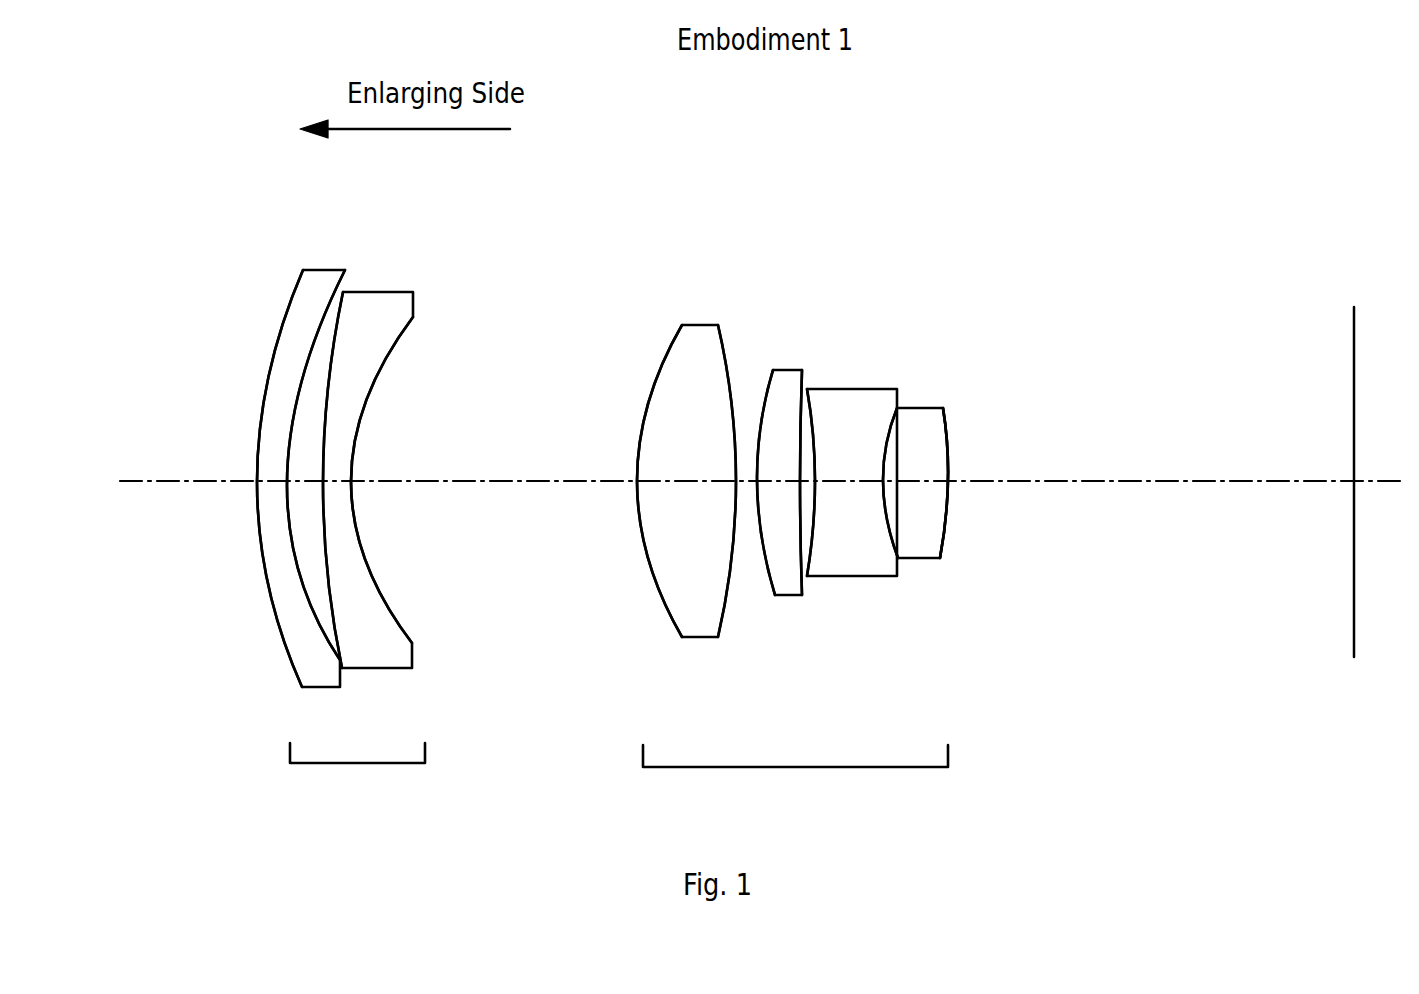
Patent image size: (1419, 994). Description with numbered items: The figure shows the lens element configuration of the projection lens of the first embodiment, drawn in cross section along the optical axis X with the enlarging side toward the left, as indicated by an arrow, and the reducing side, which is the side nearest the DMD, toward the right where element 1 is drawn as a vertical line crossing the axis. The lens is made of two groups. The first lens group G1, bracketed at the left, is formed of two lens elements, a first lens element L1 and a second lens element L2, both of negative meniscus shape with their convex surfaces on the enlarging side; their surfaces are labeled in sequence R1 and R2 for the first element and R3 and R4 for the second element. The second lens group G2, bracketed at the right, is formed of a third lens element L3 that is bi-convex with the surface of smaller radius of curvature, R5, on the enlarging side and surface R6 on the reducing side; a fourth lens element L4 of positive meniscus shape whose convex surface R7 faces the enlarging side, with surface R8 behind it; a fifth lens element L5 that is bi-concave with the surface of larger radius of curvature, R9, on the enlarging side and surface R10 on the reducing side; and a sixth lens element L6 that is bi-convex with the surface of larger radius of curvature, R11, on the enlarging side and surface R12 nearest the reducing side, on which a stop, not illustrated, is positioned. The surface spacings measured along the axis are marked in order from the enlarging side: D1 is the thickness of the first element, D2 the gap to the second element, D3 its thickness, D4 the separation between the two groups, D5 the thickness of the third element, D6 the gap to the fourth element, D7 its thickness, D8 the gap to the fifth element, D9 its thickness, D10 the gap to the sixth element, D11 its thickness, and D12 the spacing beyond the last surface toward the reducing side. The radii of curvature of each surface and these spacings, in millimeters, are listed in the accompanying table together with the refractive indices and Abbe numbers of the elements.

The image plane (display element) 1 is at (1353, 365).
The optical axis X is at (174, 482).
The first lens element L1 is at (323, 268).
The second lens element L2 is at (393, 290).
The third lens element L3 is at (692, 325).
The fourth lens element L4 is at (787, 365).
The fifth lens element L5 is at (867, 388).
The sixth lens element L6 is at (916, 408).
The lens surface R1 is at (283, 351).
The lens surface R2 is at (315, 352).
The lens surface R3 is at (313, 358).
The lens surface R4 is at (380, 371).
The lens surface R5 is at (664, 357).
The lens surface R6 is at (729, 361).
The lens surface R7 is at (760, 423).
The lens surface R8 is at (806, 380).
The lens surface R9 is at (810, 452).
The lens surface R10 is at (882, 440).
The lens surface R11 is at (898, 432).
The lens surface R12 is at (948, 458).
The surface spacing D1 is at (280, 482).
The surface spacing D2 is at (293, 487).
The surface spacing D3 is at (340, 485).
The surface spacing D4 is at (520, 481).
The surface spacing D5 is at (689, 510).
The surface spacing D6 is at (737, 488).
The surface spacing D7 is at (767, 487).
The surface spacing D8 is at (801, 487).
The surface spacing D9 is at (842, 510).
The surface spacing D10 is at (887, 487).
The surface spacing D11 is at (927, 510).
The surface spacing D12 is at (1070, 488).
The first lens group G1 is at (357, 777).
The second lens group G2 is at (795, 778).